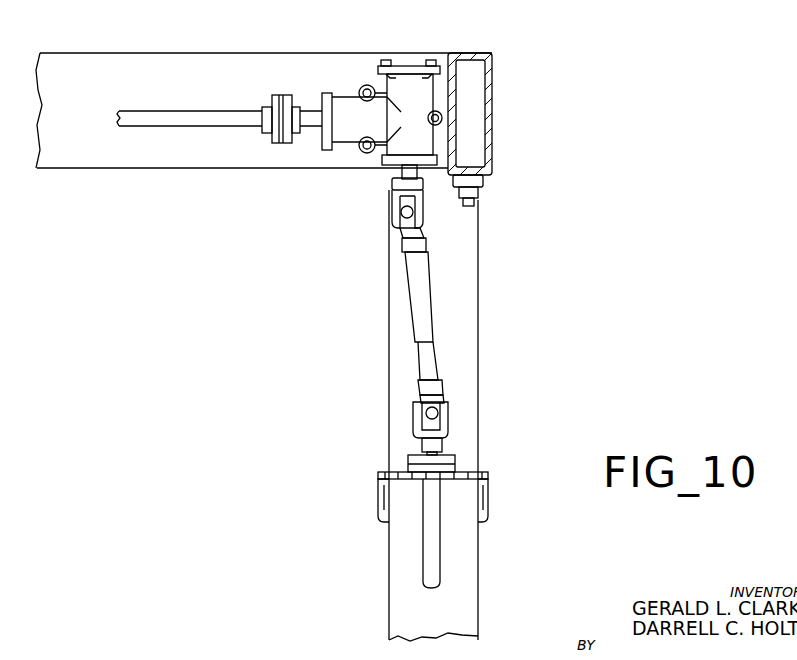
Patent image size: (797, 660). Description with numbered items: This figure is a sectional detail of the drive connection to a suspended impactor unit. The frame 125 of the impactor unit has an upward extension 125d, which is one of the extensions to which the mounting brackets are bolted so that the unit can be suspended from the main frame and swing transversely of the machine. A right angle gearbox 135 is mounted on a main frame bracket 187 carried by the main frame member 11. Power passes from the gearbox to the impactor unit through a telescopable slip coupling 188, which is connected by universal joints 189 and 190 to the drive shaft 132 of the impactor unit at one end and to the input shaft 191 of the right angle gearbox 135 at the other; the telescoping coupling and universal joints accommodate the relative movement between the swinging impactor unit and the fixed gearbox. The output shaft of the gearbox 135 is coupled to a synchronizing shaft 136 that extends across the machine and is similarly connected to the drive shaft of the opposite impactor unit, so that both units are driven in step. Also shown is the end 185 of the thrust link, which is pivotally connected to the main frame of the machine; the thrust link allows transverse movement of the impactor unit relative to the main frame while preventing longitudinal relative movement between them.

The frame member 11 is at (495, 105).
The frame 125 is at (388, 610).
The upward extension 125d is at (478, 378).
The drive shaft 132 is at (440, 565).
The right angle gearbox 135 is at (347, 147).
The shaft 136 is at (192, 128).
The other end of thrust link 185 is at (483, 186).
The main frame bracket 187 is at (403, 66).
The telescopable slip coupling 188 is at (433, 308).
The universal joint 189 is at (413, 414).
The universal joint 190 is at (392, 217).
The input shaft 191 is at (398, 178).